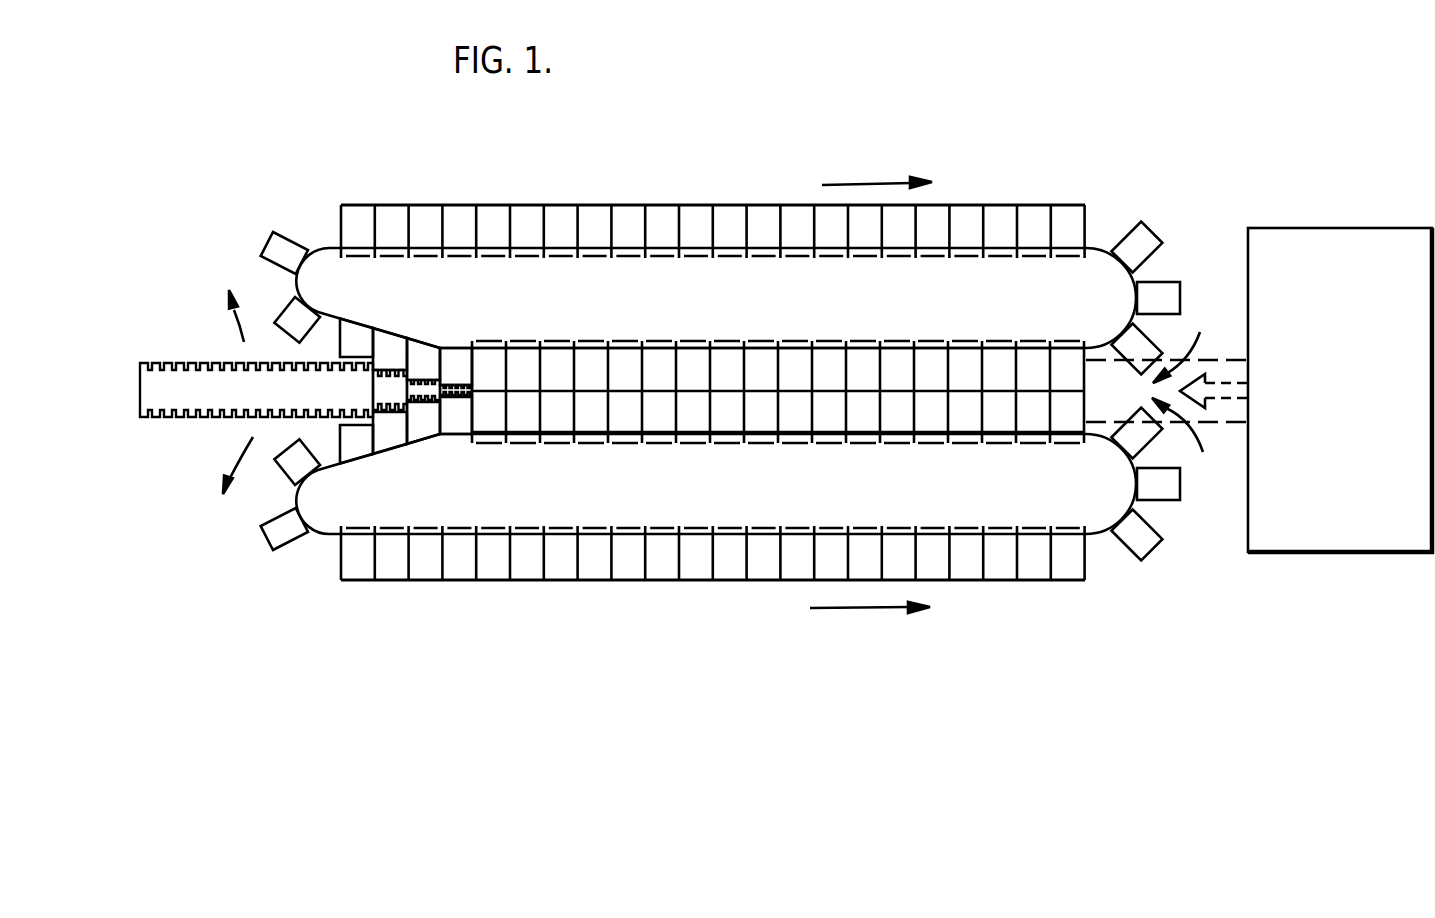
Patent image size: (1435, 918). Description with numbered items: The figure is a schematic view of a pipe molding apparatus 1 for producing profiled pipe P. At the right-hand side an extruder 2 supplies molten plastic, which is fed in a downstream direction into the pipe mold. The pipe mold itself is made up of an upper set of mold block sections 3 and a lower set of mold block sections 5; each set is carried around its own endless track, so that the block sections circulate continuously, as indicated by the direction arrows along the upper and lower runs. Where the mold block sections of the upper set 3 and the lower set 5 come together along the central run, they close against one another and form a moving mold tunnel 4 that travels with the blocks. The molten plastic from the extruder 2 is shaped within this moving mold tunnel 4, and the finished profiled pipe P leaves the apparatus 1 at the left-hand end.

The pipe molding apparatus 1 is at (1091, 171).
The extruder 2 is at (1316, 252).
The upper set of mold block sections 3 is at (755, 205).
The moving mold tunnel 4 is at (795, 420).
The lower set of mold block sections 5 is at (720, 582).
The profiled pipe P is at (177, 434).